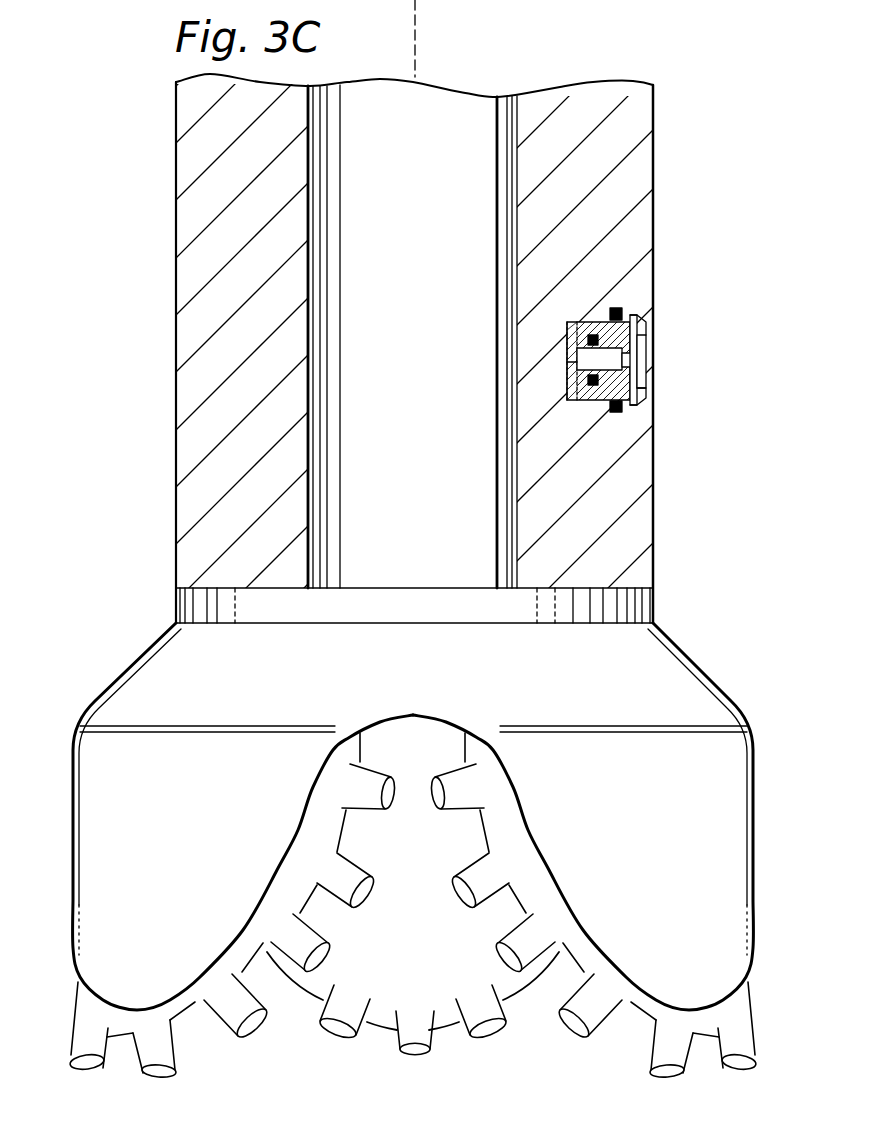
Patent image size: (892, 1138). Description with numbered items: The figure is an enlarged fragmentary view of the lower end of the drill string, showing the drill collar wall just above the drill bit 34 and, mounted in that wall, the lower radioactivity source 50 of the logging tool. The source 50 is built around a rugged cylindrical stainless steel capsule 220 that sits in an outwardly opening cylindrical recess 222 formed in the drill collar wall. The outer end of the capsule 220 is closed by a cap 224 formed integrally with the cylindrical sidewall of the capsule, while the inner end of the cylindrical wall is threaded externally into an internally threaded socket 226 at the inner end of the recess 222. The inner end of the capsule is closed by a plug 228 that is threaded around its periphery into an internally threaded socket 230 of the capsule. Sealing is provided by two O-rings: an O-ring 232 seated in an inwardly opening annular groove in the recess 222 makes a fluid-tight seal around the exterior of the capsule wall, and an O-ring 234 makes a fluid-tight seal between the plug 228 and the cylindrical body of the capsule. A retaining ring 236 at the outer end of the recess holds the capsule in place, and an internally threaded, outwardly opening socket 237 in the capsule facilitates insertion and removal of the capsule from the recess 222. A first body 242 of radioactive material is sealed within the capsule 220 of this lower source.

The drill bit 34 is at (705, 675).
The lower radioactivity source 50 is at (668, 398).
The cylindrical stainless steel capsule 220 is at (601, 306).
The cylindrical recess 222 is at (643, 336).
The cap 224 is at (646, 344).
The internally threaded socket 226 is at (569, 336).
The plug 228 is at (568, 362).
The internally threaded socket 230 is at (580, 321).
The O-ring 232 is at (633, 308).
The O-ring 234 is at (593, 399).
The retaining ring 236 is at (646, 318).
The outwardly opening socket 237 is at (648, 363).
The first body of radioactive material 242 is at (607, 358).